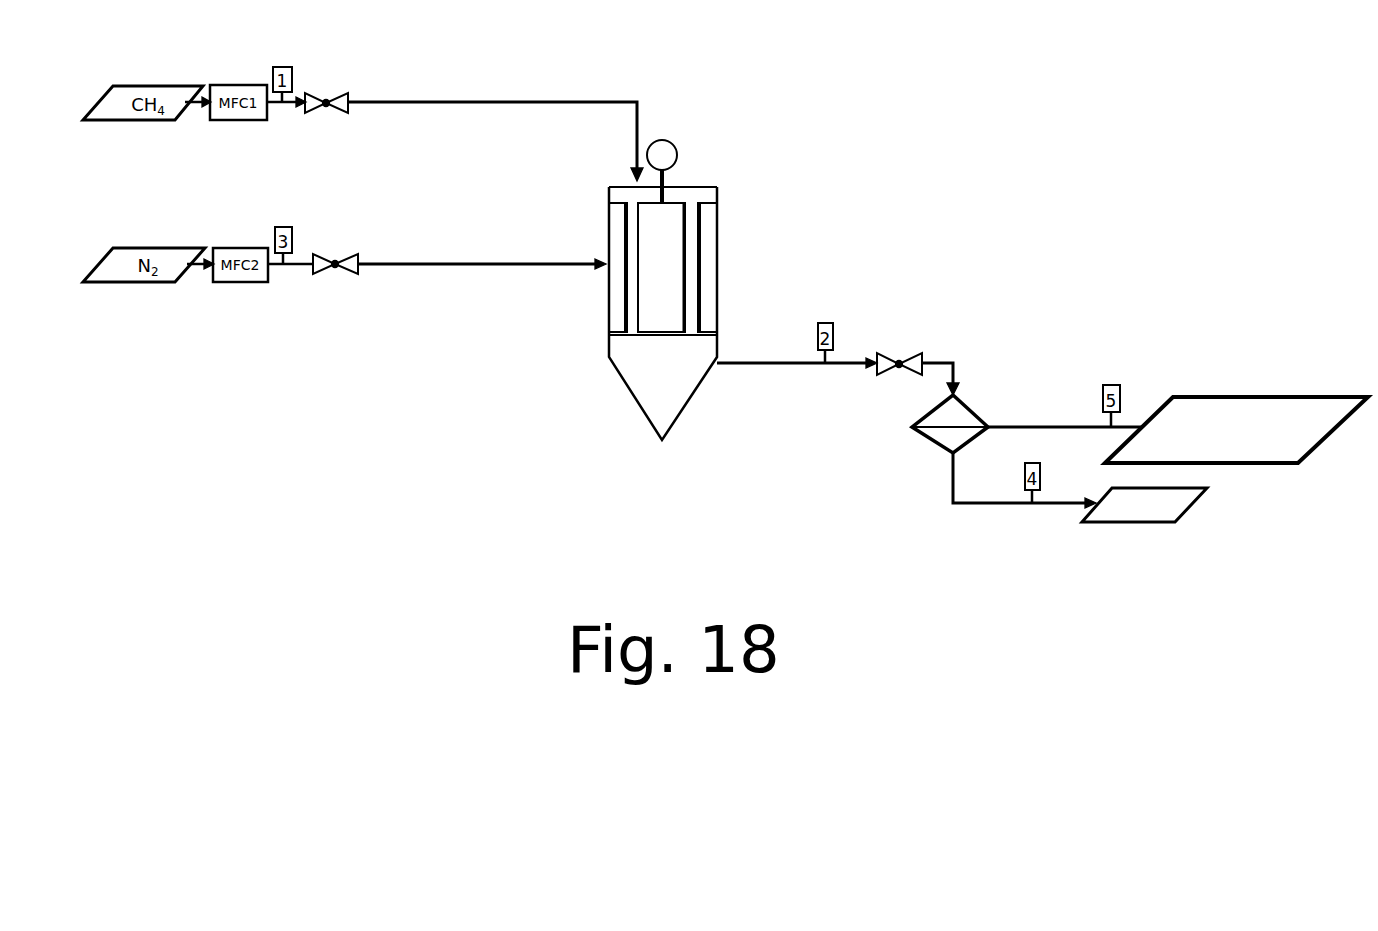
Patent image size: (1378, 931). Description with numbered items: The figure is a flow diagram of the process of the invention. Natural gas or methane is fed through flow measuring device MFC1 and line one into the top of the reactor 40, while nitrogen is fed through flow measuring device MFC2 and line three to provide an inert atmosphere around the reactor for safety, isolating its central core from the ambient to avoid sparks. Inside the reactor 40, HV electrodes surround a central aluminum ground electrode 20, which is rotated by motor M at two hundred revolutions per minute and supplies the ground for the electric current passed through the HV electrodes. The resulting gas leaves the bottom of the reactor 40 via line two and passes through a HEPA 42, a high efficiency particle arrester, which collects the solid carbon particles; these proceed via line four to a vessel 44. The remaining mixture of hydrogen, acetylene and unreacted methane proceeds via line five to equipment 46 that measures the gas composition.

The ground electrode 20 is at (657, 313).
The reactor 40 is at (745, 214).
The HEPA (high efficiency particle arrester) 42 is at (975, 407).
The vessel 44 is at (1120, 523).
The equipment 46 is at (1302, 397).